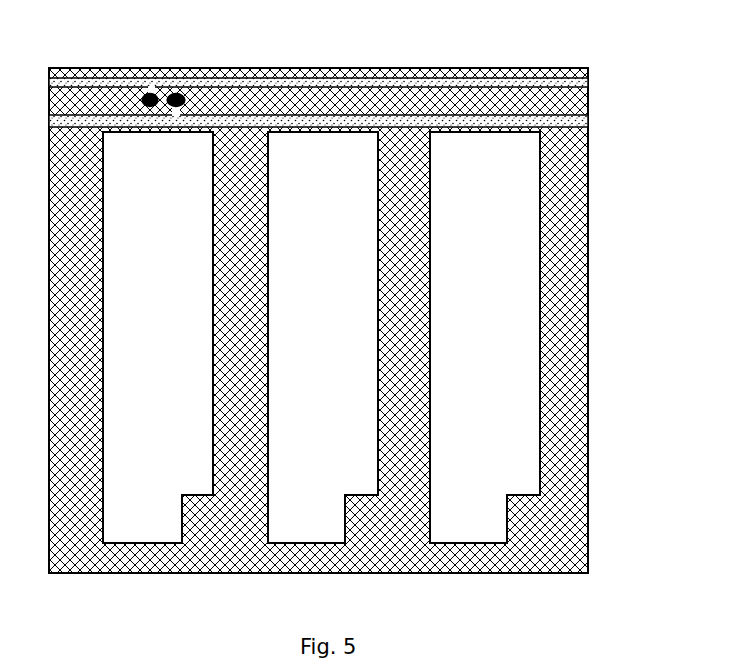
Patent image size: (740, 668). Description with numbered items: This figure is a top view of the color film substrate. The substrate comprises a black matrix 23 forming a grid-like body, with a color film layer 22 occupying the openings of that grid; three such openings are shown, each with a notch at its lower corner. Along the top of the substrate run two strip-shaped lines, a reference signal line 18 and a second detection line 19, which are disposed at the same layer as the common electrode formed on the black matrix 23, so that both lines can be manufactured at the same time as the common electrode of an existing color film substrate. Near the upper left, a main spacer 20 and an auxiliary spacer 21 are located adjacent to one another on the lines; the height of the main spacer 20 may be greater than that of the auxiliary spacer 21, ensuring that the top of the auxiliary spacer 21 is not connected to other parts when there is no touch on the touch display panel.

The reference signal line 18 is at (305, 118).
The second detection line 19 is at (247, 85).
The main spacer 20 is at (178, 95).
The auxiliary spacer 21 is at (147, 95).
The color film layer 22 is at (522, 312).
The black matrix 23 is at (568, 198).